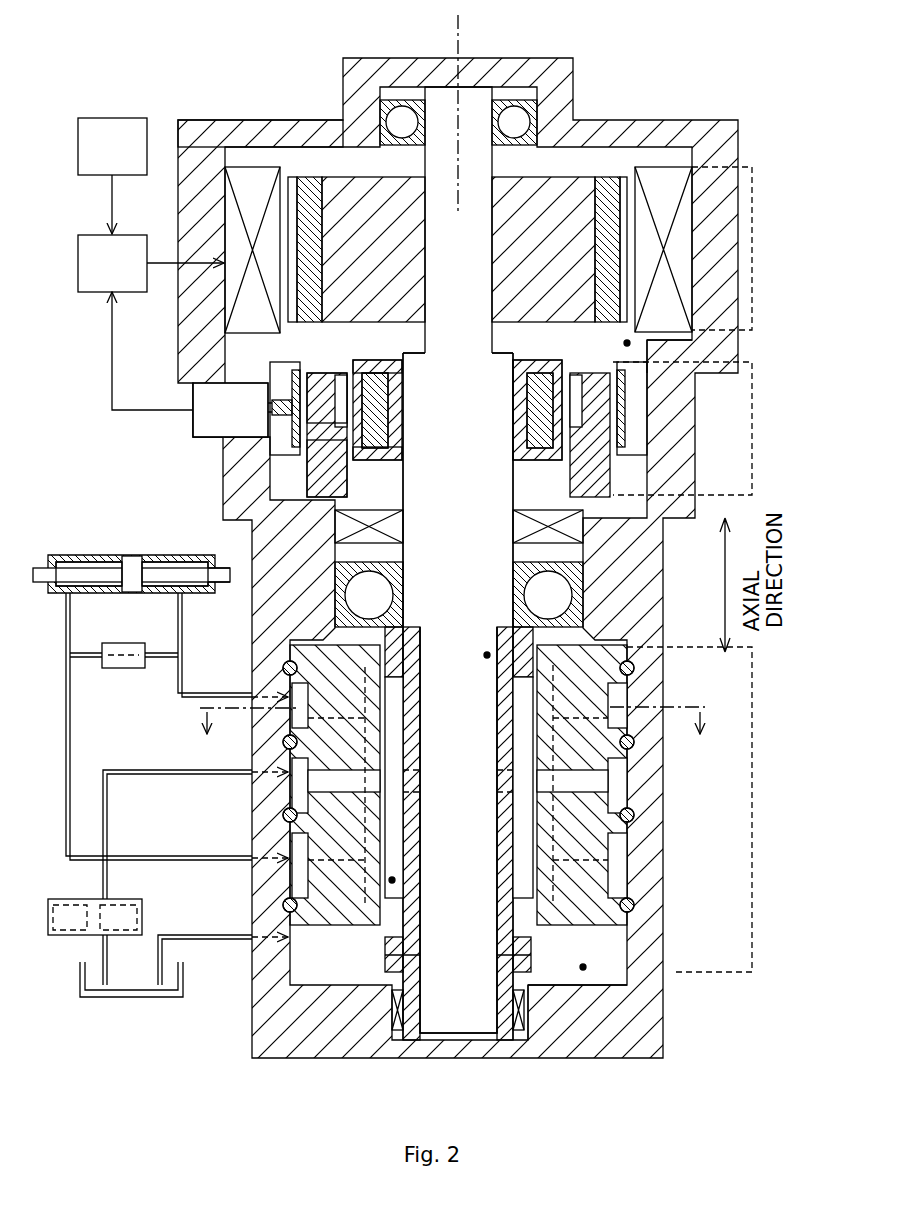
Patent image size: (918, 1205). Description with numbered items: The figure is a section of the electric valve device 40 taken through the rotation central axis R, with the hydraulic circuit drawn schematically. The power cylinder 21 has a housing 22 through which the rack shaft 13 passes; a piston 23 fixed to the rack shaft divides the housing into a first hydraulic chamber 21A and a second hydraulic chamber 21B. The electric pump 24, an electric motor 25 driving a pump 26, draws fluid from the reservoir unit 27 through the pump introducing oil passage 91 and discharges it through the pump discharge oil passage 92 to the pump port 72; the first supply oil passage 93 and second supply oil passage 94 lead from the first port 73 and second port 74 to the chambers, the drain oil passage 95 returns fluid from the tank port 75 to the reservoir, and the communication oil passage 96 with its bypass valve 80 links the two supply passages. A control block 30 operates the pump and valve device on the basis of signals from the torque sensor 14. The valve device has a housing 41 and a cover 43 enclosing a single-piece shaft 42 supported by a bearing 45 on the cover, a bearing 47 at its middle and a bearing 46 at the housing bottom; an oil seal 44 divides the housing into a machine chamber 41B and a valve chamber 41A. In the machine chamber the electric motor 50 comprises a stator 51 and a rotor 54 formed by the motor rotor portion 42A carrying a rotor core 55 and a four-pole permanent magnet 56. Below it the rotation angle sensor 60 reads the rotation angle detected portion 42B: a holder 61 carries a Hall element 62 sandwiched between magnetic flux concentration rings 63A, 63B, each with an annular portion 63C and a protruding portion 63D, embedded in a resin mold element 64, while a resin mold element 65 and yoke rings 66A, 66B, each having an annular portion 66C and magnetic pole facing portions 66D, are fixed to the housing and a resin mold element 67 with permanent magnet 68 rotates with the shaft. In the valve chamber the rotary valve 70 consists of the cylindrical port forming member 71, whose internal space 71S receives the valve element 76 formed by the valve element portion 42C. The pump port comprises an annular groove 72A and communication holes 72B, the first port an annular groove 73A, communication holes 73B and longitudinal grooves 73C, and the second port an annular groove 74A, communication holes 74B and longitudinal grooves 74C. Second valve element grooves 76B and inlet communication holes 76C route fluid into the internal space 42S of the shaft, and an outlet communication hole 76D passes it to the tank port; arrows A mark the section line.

The rack shaft 13 is at (216, 570).
The torque sensor 14 is at (112, 176).
The power cylinder 21 is at (163, 515).
The first hydraulic chamber 21A is at (195, 558).
The second hydraulic chamber 21B is at (70, 558).
The housing 22 is at (100, 557).
The piston 23 is at (134, 556).
The electric pump 24 is at (52, 937).
The electric motor 25 is at (70, 904).
The pump 26 is at (120, 904).
The reservoir unit 27 is at (132, 998).
The controller 30 is at (151, 263).
The electric valve device 40 is at (209, 40).
The housing 41 is at (192, 182).
The valve chamber 41A is at (583, 971).
The machine chamber 41B is at (630, 343).
The shaft 42 is at (456, 74).
The motor rotor portion 42A is at (540, 185).
The rotation angle detected portion 42B is at (506, 352).
The valve element portion 42C is at (412, 686).
The internal space 42S is at (484, 655).
The cover 43 is at (228, 130).
The oil seal 44 is at (338, 520).
The bearing 45 is at (380, 108).
The bearing 46 is at (392, 1010).
The bearing 47 is at (338, 590).
The electric motor 50 is at (752, 248).
The stator 51 is at (665, 200).
The rotor 54 is at (676, 80).
The rotor core 55 is at (605, 195).
The permanent magnet 56 is at (622, 200).
The rotation angle sensor 60 is at (752, 428).
The holder 61 is at (193, 421).
The Hall element 62 is at (280, 400).
The first magnetic flux concentration ring 63A is at (285, 368).
The second magnetic flux concentration ring 63B is at (288, 440).
The annular portion 63C is at (648, 405).
The protruding portion 63D is at (230, 410).
The resin mold element 64 is at (320, 478).
The resin mold element 65 is at (385, 475).
The yoke ring 66A is at (338, 372).
The yoke ring 66B is at (345, 455).
The annular portion 66C is at (555, 395).
The magnetic pole facing portions 66D is at (393, 378).
The resin mold element 67 is at (390, 405).
The permanent magnet 68 is at (372, 412).
The rotary valve 70 is at (752, 815).
The port forming member 71 is at (290, 655).
The internal space 71S is at (396, 880).
The pump port 72 is at (288, 787).
The annular groove 72A is at (300, 850).
The communication holes 72B is at (320, 797).
The first port 73 is at (288, 712).
The annular groove 73A is at (300, 688).
The communication holes 73B is at (300, 740).
The longitudinal grooves 73C is at (355, 772).
The second port 74 is at (288, 876).
The annular groove 74A is at (628, 866).
The communication holes 74B is at (548, 900).
The longitudinal grooves 74C is at (548, 822).
The tank port 75 is at (288, 958).
The valve element 76 is at (459, 833).
The second valve element grooves 76B is at (398, 745).
The inlet communication holes 76C is at (418, 770).
The outlet communication hole 76D is at (410, 955).
The bypass valve 80 is at (122, 670).
The pump introducing oil passage 91 is at (109, 950).
The pump discharge oil passage 92 is at (178, 778).
The first supply oil passage 93 is at (182, 612).
The second supply oil passage 94 is at (71, 612).
The drain oil passage 95 is at (200, 942).
The communication oil passage 96 is at (70, 666).
The rotation central axis R is at (462, 27).
The section line A- A is at (454, 734).